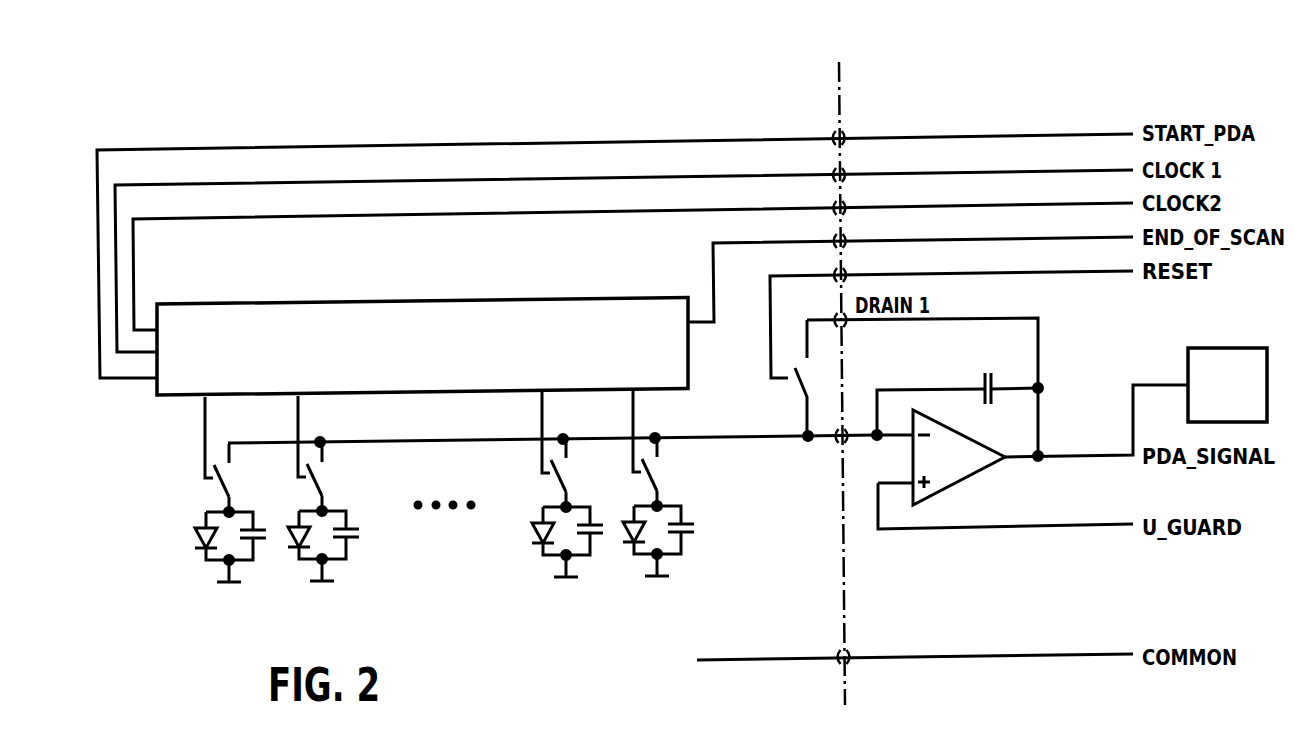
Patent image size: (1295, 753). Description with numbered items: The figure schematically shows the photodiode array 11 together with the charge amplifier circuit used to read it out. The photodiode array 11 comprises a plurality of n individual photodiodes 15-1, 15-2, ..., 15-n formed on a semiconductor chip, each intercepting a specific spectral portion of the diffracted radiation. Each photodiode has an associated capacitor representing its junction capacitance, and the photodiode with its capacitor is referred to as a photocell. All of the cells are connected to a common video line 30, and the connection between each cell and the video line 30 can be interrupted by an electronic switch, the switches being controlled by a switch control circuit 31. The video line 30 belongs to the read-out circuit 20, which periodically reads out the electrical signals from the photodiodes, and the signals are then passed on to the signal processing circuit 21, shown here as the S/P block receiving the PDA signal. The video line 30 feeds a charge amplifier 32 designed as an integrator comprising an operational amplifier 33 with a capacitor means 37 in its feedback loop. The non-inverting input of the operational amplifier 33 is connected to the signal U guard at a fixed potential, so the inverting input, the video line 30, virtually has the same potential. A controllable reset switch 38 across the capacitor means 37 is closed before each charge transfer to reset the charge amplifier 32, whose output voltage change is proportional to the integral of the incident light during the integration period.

The photodiode array 11 is at (421, 504).
The photodiode 15-1 is at (194, 540).
The photodiode 15-2 is at (306, 551).
The photodiode 15-n is at (627, 530).
The read-out circuit 20 is at (947, 63).
The signal processing circuit 21 is at (1237, 360).
The video line 30 is at (758, 444).
The switch control circuit 31 is at (463, 327).
The charge amplifier 32 is at (1032, 421).
The operational amplifier 33 is at (962, 470).
The capacitor means 37 is at (986, 372).
The reset switch 38 is at (794, 366).